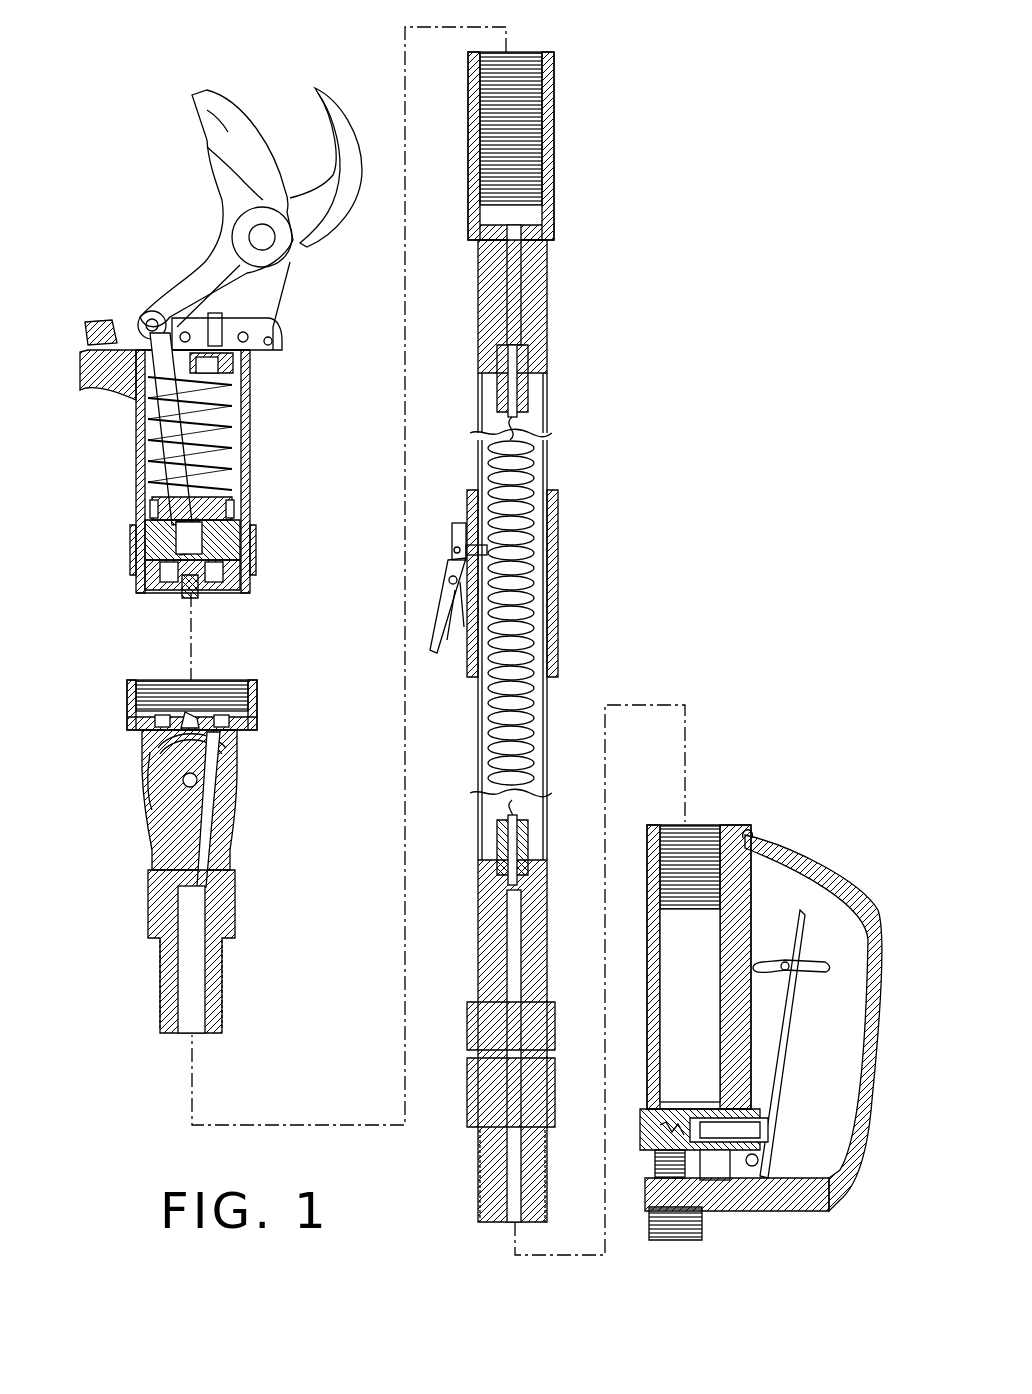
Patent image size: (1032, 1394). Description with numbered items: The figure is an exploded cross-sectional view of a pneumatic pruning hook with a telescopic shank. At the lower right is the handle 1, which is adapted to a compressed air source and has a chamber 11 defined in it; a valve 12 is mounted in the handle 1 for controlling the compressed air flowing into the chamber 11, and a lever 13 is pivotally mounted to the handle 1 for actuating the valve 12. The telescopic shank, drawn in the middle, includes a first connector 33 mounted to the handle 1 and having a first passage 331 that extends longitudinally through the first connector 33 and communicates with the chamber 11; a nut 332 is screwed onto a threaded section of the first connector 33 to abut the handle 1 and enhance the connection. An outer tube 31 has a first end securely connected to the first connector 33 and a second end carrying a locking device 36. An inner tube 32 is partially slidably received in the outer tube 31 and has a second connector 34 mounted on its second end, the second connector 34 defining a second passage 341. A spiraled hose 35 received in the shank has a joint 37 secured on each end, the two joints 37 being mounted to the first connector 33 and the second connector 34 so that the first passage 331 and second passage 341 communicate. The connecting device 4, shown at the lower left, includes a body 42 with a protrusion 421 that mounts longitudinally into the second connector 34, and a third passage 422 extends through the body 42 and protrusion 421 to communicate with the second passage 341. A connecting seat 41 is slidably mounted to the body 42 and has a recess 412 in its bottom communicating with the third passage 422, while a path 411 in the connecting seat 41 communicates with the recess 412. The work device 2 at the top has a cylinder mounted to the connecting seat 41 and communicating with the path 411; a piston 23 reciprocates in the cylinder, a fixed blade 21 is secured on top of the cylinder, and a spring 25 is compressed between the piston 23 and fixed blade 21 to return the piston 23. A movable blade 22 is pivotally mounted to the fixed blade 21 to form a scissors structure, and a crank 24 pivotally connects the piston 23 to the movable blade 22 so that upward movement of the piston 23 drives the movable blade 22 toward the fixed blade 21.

The handle 1 is at (752, 885).
The chamber 11 is at (678, 948).
The valve 12 is at (775, 1135).
The lever 13 is at (782, 1055).
The work device 2 is at (120, 418).
The fixed blade 21 is at (337, 137).
The movable blade 22 is at (225, 128).
The piston 23 is at (240, 540).
The crank 24 is at (232, 420).
The spring 25 is at (162, 466).
The outer tube 31 is at (478, 942).
The inner tube 32 is at (478, 396).
The first connector 33 is at (470, 1040).
The first passage 331 is at (510, 945).
The nut 332 is at (470, 1096).
The second connector 34 is at (470, 244).
The second passage 341 is at (505, 283).
The spiraled hose 35 is at (536, 630).
The locking device 36 is at (447, 538).
The joint 37 is at (520, 404).
The connecting device 4 is at (140, 832).
The connecting seat 41 is at (130, 716).
The path 411 is at (198, 716).
The recess 412 is at (236, 734).
The body 42 is at (160, 850).
The protrusion 421 is at (168, 978).
The third passage 422 is at (196, 985).